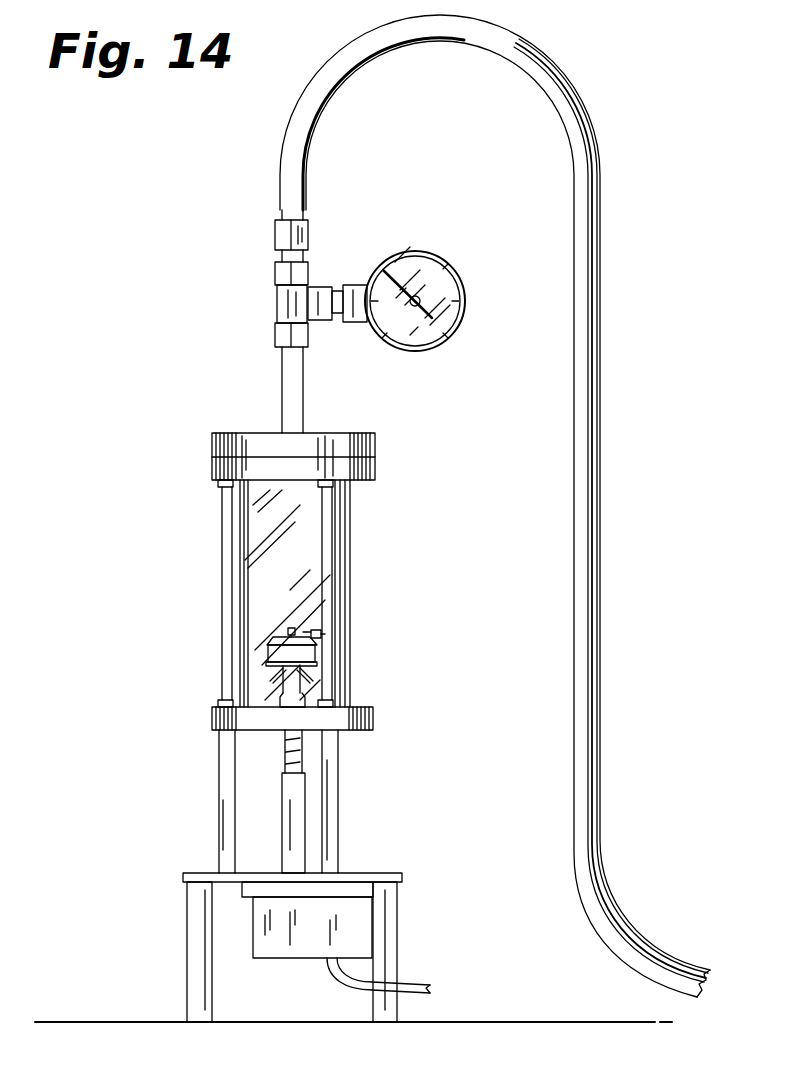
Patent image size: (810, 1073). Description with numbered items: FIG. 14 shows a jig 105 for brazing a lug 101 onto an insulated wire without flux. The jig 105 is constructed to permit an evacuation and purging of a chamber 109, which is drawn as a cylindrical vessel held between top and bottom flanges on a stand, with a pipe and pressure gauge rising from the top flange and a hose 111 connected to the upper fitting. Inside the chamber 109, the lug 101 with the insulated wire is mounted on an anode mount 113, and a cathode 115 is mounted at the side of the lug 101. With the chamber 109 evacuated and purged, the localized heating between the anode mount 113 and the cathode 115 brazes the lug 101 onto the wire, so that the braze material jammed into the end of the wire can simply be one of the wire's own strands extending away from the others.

The lug 101 is at (289, 630).
The jig 105 is at (253, 322).
The chamber 109 is at (350, 522).
The hose 111 is at (603, 487).
The anode mount 113 is at (273, 652).
The cathode 115 is at (314, 636).